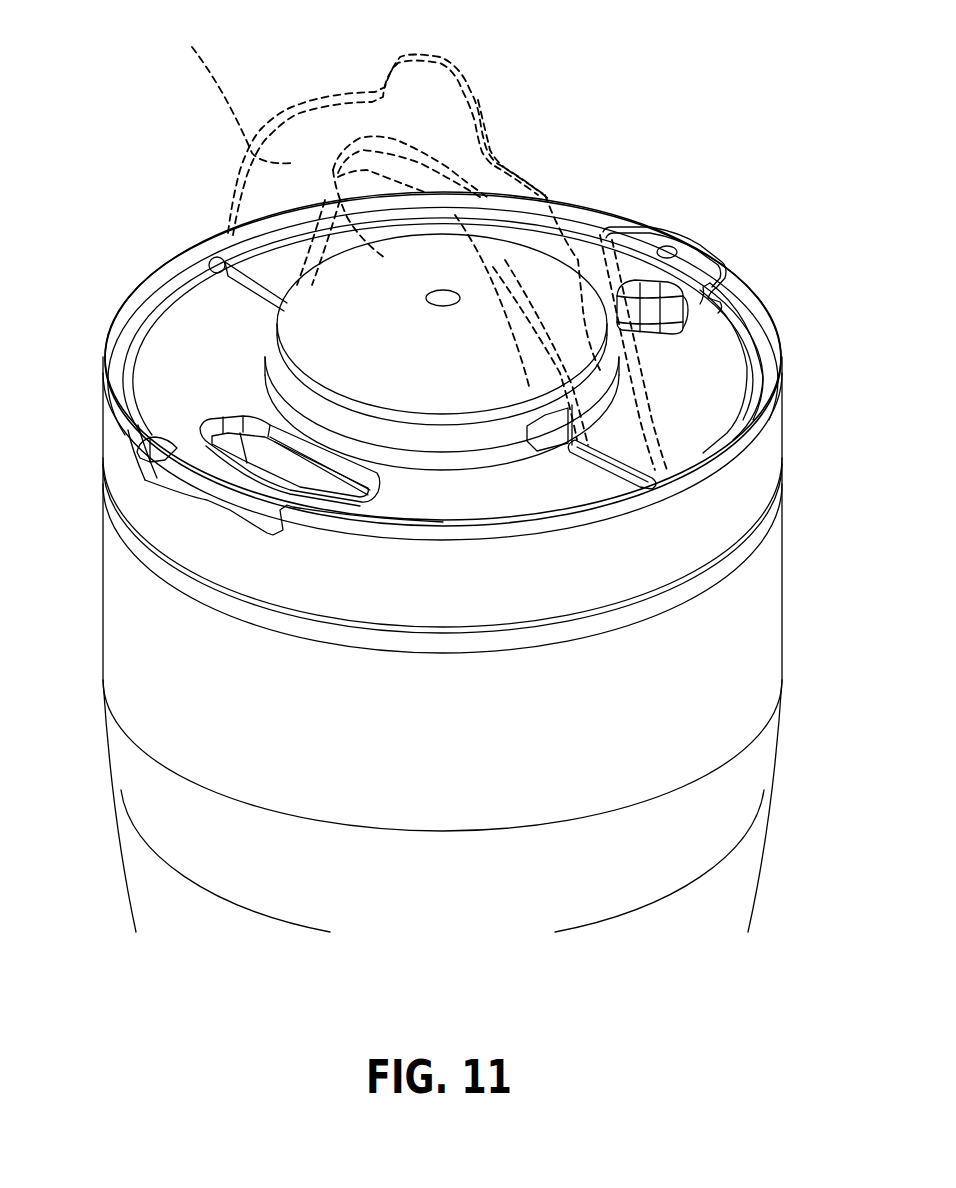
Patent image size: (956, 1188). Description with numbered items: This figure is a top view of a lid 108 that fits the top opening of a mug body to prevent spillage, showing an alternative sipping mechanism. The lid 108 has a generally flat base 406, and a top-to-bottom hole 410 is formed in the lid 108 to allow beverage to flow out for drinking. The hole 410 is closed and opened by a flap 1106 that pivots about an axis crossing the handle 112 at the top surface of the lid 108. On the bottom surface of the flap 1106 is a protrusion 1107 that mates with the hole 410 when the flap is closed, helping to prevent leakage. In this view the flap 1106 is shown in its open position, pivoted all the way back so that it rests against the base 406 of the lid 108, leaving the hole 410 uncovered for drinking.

The lid 108 is at (520, 90).
The handle 112 is at (461, 363).
The base 406 is at (562, 501).
The hole 410 is at (240, 433).
The flap 1106 is at (800, 274).
The protrusion 1107 is at (608, 244).